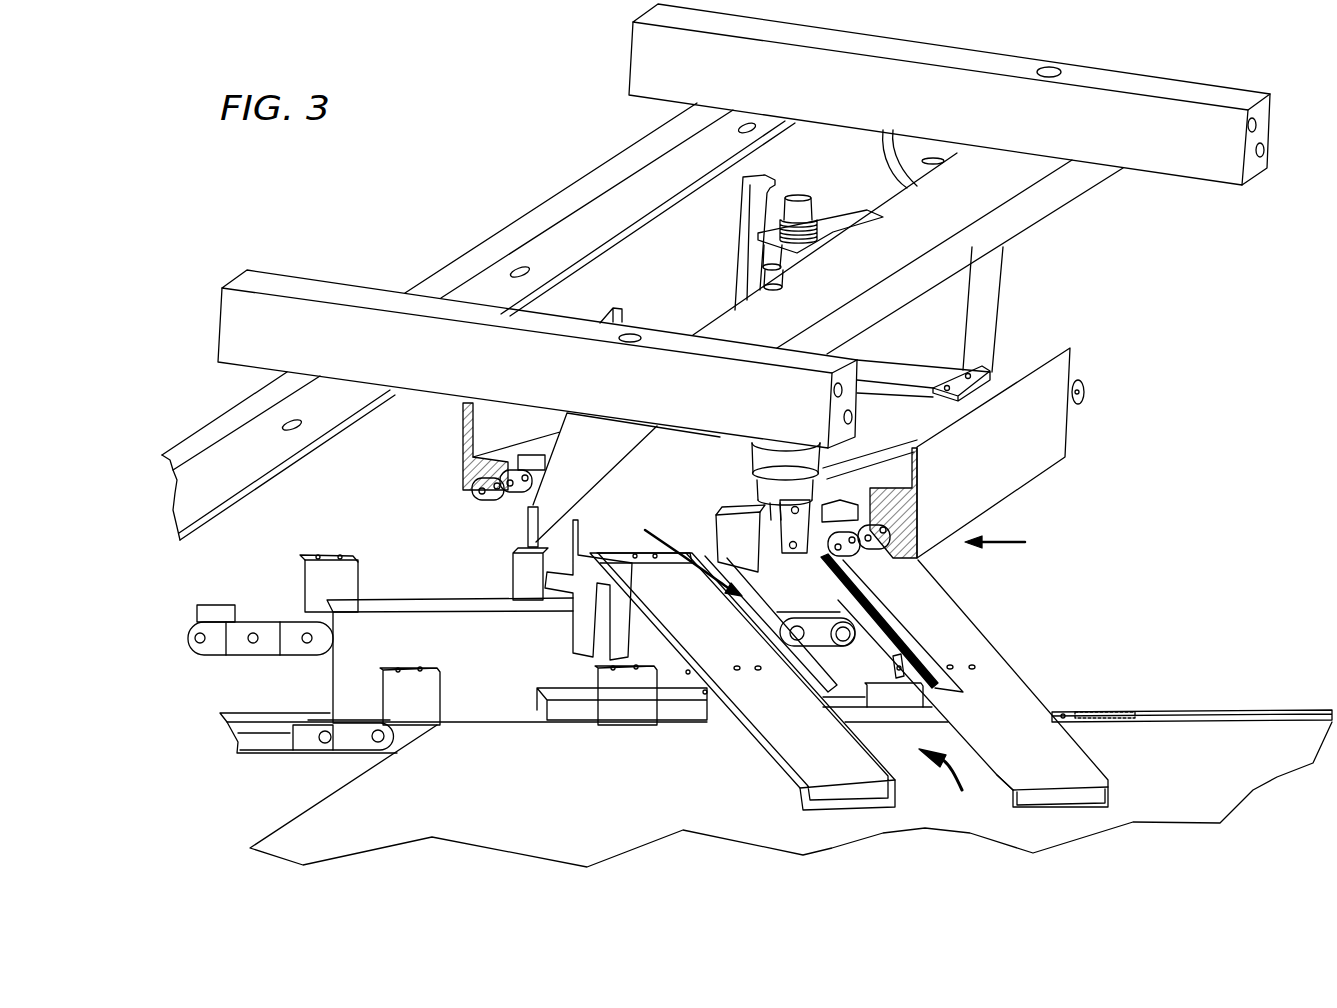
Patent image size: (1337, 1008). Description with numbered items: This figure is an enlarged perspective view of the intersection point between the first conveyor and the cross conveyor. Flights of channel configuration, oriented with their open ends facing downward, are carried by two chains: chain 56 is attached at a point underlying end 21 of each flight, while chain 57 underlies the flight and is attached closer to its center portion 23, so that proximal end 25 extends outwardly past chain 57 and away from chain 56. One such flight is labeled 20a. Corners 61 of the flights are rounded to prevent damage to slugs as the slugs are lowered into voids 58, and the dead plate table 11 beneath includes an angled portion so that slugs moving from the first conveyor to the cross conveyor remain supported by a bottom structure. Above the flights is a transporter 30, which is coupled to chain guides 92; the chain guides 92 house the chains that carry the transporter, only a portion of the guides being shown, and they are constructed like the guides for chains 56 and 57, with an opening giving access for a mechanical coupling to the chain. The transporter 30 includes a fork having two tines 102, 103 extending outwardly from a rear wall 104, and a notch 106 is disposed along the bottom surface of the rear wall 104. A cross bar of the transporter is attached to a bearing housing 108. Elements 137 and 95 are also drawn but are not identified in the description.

The cross beam 137 is at (923, 240).
The bearing housing 108 is at (771, 456).
The notch 106 is at (733, 532).
The rear wall 104 is at (773, 538).
The tine 102 is at (752, 608).
The transporter 30 is at (682, 549).
The chain link assembly 95 is at (890, 558).
The tine 103 is at (893, 623).
The end of flight 21 is at (915, 558).
The chain guide 92 is at (1008, 544).
The center portion of flight 23 is at (985, 658).
The proximal end of flight 25 is at (1077, 763).
The channel rail 20a is at (837, 773).
The void 58 is at (947, 784).
The corner of flight 61 is at (997, 778).
The dead plate table 11 is at (597, 821).
The chain 56 is at (282, 637).
The chain 57 is at (373, 735).